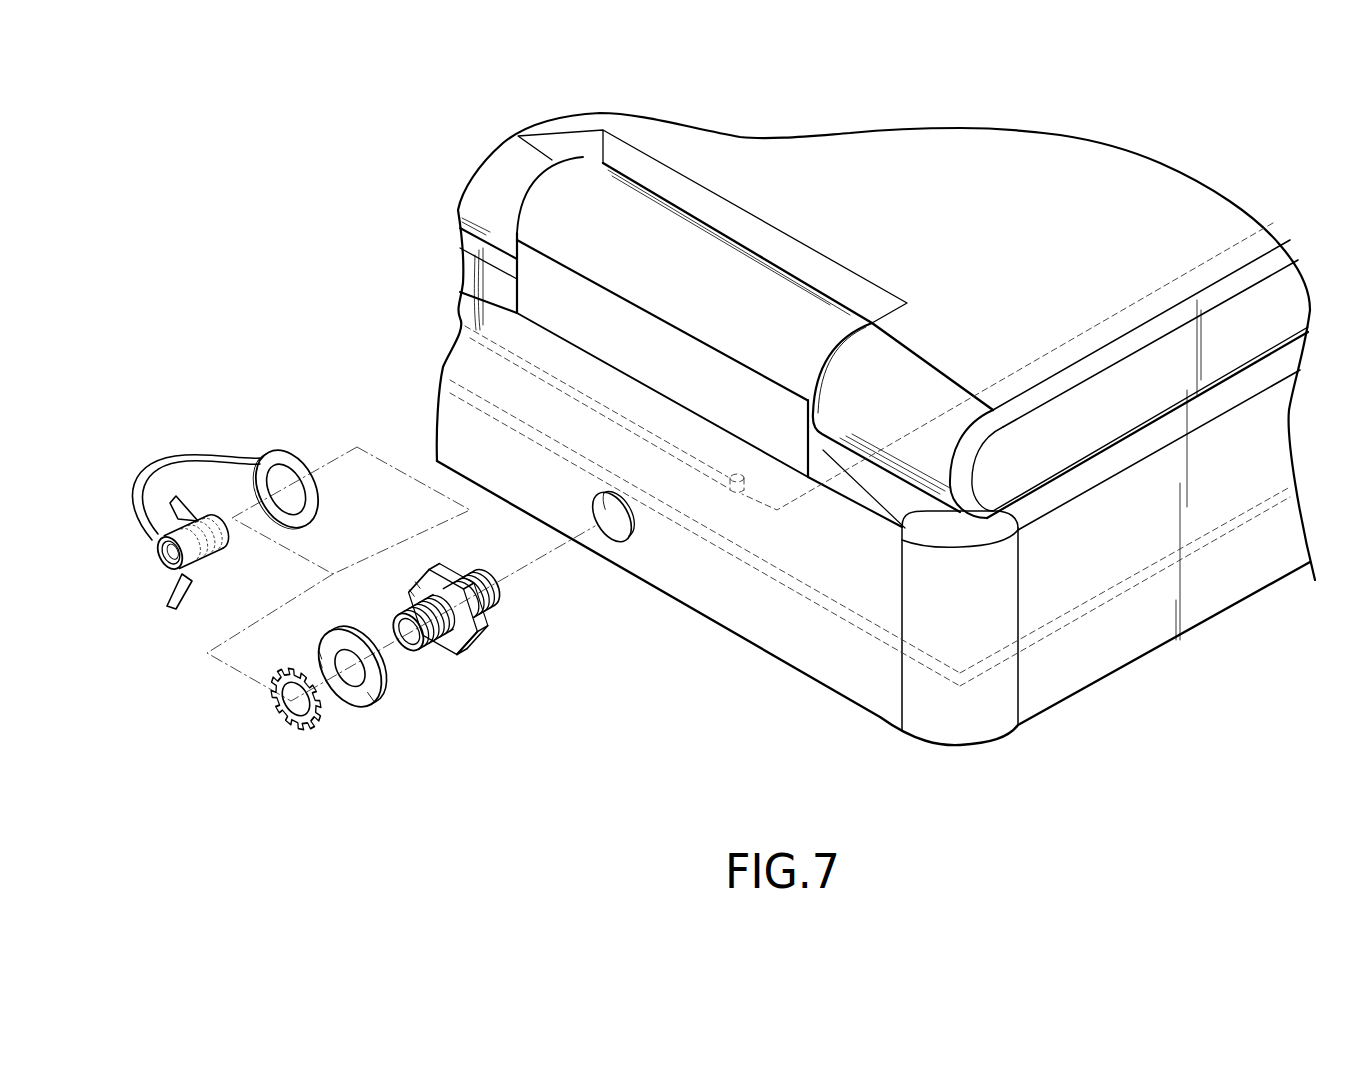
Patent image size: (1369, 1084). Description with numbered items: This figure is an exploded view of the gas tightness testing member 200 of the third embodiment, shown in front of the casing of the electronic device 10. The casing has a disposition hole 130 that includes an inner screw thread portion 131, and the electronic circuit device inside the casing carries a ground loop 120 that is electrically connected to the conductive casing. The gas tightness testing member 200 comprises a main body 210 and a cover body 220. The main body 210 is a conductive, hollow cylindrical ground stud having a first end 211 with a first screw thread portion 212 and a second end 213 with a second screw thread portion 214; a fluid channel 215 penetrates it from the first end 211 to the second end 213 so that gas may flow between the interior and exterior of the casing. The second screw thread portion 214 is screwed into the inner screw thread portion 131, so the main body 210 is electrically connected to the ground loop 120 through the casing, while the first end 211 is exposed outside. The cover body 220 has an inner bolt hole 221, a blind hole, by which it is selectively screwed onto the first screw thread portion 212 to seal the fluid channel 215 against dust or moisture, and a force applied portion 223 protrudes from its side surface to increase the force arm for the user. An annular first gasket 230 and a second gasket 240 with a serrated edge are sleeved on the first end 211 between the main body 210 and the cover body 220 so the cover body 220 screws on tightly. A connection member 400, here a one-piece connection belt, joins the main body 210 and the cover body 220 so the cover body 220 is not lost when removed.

The electronic device 10 is at (351, 268).
The ground loop 120 is at (742, 492).
The disposition hole 130 is at (592, 508).
The inner screw thread portion 131 is at (637, 532).
The gas tightness testing member 200 is at (421, 724).
The main body 210 is at (480, 670).
The first end 211 is at (397, 607).
The first screw thread portion 212 is at (455, 658).
The second end 213 is at (499, 598).
The second screw thread portion 214 is at (492, 624).
The fluid channel 215 is at (396, 628).
The cover body 220 is at (152, 564).
The inner bolt hole 221 is at (219, 562).
The force applied portion 223 is at (193, 592).
The first gasket 230 is at (357, 703).
The second gasket 240 is at (293, 730).
The connection member 400 is at (191, 453).